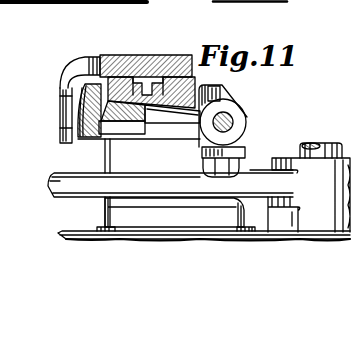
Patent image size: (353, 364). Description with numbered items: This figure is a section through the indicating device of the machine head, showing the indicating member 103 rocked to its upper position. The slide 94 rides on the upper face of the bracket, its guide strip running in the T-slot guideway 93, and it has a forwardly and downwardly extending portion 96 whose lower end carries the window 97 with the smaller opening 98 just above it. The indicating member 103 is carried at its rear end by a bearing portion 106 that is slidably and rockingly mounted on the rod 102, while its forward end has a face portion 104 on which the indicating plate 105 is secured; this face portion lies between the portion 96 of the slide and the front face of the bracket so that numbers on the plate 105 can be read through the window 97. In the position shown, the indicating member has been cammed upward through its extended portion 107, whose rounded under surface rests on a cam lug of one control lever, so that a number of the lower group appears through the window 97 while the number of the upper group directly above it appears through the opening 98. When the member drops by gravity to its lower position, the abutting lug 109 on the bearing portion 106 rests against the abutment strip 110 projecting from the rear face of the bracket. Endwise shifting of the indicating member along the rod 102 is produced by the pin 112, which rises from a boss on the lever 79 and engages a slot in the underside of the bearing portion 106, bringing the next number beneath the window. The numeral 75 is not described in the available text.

The nut 75 is at (318, 143).
The lever 79 is at (84, 198).
The guideway 93 is at (150, 82).
The slide 94 is at (118, 62).
The forwardly and downwardly extending portion 96 is at (75, 70).
The window 97 is at (60, 128).
The opening 98 is at (60, 95).
The rod 102 is at (231, 116).
The indicating member 103 is at (172, 128).
The face portion 104 is at (88, 137).
The indicating plate 105 is at (62, 103).
The bearing portion 106 is at (240, 127).
The extended portion 107 is at (127, 130).
The abutting lug 109 is at (221, 90).
The abutment strip 110 is at (194, 97).
The pin 112 is at (243, 156).